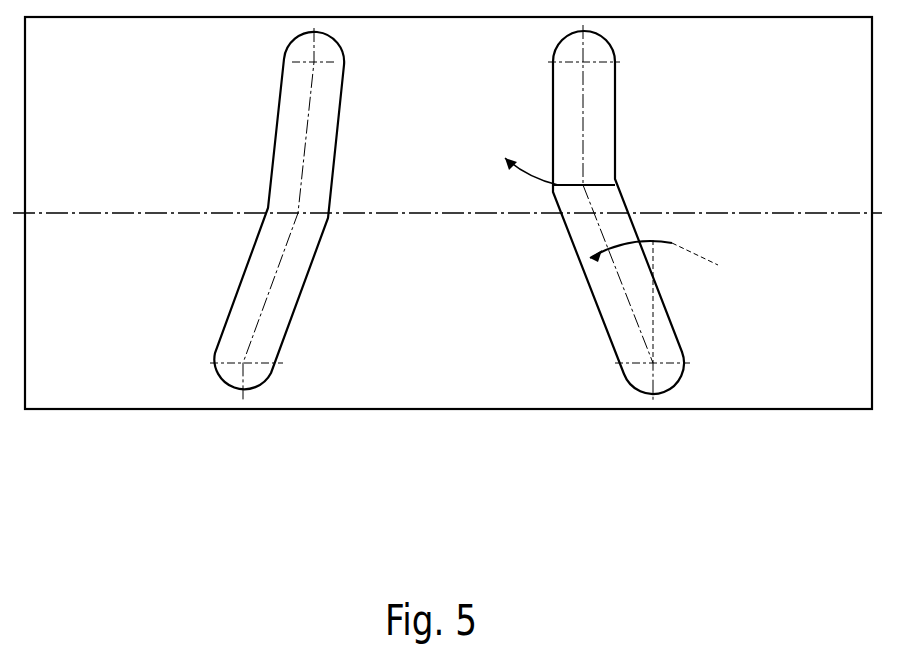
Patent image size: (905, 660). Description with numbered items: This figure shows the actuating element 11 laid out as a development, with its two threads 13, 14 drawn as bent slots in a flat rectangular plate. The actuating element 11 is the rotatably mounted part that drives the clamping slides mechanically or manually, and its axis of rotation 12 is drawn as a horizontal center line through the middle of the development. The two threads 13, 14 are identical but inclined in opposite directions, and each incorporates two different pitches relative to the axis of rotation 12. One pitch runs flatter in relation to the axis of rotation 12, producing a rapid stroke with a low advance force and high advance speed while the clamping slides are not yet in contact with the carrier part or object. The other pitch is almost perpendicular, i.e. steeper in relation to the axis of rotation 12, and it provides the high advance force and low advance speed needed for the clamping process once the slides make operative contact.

The actuating element 11 is at (755, 367).
The axis of rotation 12 is at (163, 213).
The thread 13 is at (293, 317).
The thread 14 is at (603, 320).